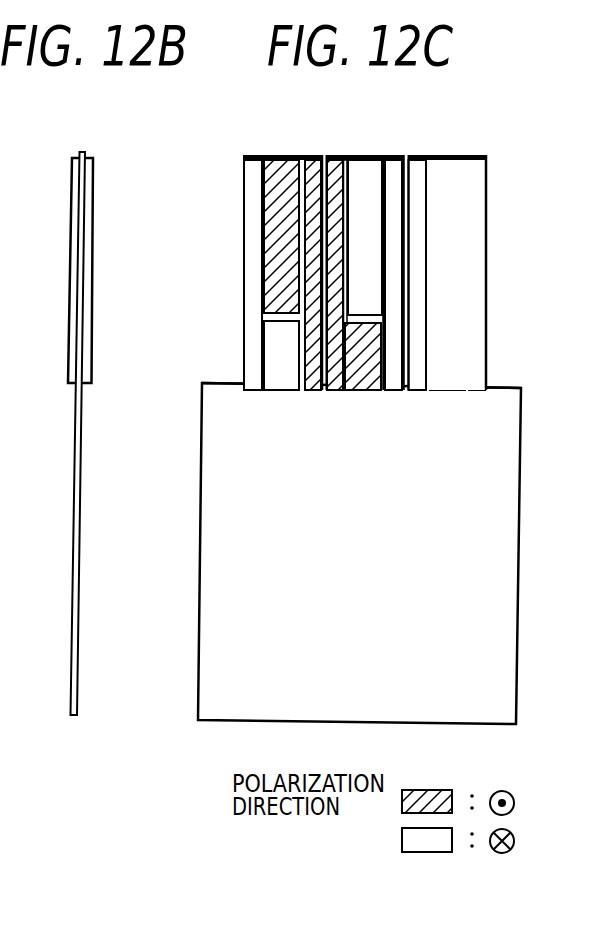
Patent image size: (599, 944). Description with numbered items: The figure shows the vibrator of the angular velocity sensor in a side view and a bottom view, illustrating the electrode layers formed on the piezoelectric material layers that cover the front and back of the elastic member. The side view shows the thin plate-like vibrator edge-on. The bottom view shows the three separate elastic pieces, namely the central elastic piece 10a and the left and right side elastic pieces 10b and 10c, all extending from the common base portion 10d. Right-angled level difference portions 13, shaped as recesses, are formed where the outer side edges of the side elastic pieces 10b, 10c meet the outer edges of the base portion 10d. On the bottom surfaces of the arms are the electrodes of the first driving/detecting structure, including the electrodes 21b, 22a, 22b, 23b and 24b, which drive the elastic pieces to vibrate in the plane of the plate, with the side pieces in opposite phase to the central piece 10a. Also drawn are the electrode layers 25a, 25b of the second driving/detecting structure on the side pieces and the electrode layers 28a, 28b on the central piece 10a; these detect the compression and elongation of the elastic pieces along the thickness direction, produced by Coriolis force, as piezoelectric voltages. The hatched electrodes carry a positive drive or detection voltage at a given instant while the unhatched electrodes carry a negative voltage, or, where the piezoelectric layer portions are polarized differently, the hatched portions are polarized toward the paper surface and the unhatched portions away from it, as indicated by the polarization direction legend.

The central elastic piece 10a is at (378, 286).
The side elastic piece 10b is at (482, 244).
The side elastic piece 10c is at (367, 244).
The base portion 10d is at (498, 652).
The level difference portion 13 is at (236, 372).
The electrode 21b is at (313, 295).
The electrode 22a is at (251, 238).
The electrode 22b is at (415, 283).
The electrode 23b is at (333, 392).
The electrode 24b is at (395, 392).
The electrode layer 25a is at (270, 197).
The electrode layer 25b is at (270, 343).
The electrode layer 28a is at (353, 392).
The electrode layer 28b is at (362, 390).